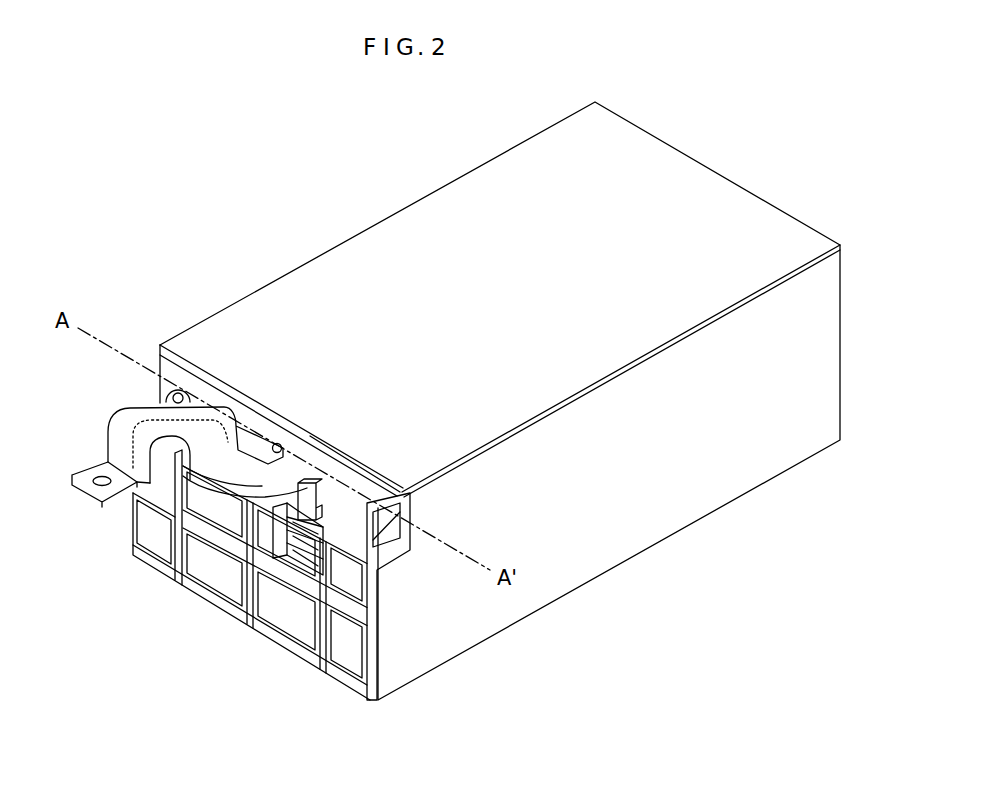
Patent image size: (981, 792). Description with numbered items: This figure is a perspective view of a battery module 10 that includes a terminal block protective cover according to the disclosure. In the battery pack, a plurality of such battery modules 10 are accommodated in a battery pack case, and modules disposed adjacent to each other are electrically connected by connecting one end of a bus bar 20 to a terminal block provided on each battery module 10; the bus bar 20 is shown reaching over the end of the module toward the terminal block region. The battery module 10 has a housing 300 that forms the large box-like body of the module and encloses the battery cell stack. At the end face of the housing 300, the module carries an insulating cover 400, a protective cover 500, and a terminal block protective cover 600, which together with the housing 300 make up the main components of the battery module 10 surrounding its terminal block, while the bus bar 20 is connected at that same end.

The battery module 10 is at (252, 229).
The bus bar 20 is at (107, 420).
The housing 300 is at (470, 186).
The insulating cover 400 is at (297, 562).
The protective cover 500 is at (145, 569).
The terminal block protective cover 600 is at (403, 587).